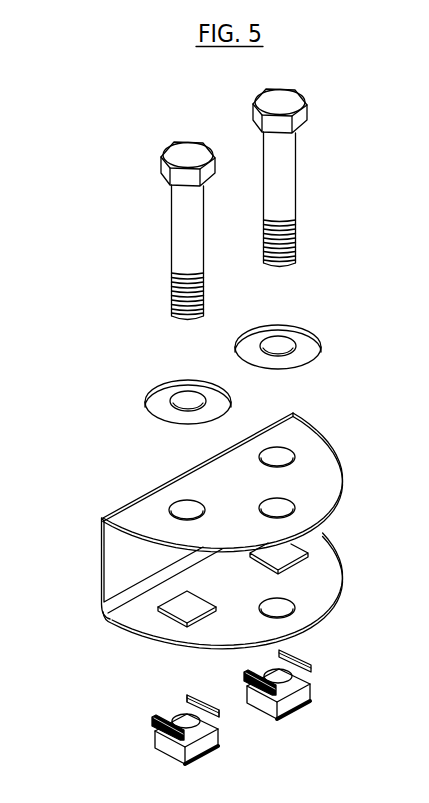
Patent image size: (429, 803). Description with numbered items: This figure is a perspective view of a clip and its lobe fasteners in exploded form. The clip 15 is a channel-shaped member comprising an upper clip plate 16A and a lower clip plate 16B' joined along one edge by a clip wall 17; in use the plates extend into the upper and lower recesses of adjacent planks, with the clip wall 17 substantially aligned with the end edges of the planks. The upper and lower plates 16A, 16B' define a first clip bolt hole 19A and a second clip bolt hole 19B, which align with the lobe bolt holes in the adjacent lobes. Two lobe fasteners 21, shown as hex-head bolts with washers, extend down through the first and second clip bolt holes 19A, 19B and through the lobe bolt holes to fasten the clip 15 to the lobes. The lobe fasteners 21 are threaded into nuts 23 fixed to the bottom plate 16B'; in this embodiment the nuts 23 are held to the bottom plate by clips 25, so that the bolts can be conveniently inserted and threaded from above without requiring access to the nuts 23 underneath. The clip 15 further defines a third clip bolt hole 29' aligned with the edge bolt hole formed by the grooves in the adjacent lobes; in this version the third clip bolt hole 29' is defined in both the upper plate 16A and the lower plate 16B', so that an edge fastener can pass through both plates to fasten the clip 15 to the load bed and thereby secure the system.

The clip 15 is at (222, 531).
The upper clip plate 16A is at (342, 478).
The lower clip plate 16B' is at (253, 591).
The clip wall 17 is at (101, 562).
The first clip bolt hole 19A is at (279, 460).
The second clip bolt hole 19B is at (189, 512).
The lobe fastener 21 is at (172, 141).
The nut 23 is at (305, 713).
The clip 25 is at (309, 655).
The third clip bolt hole 29' is at (308, 568).